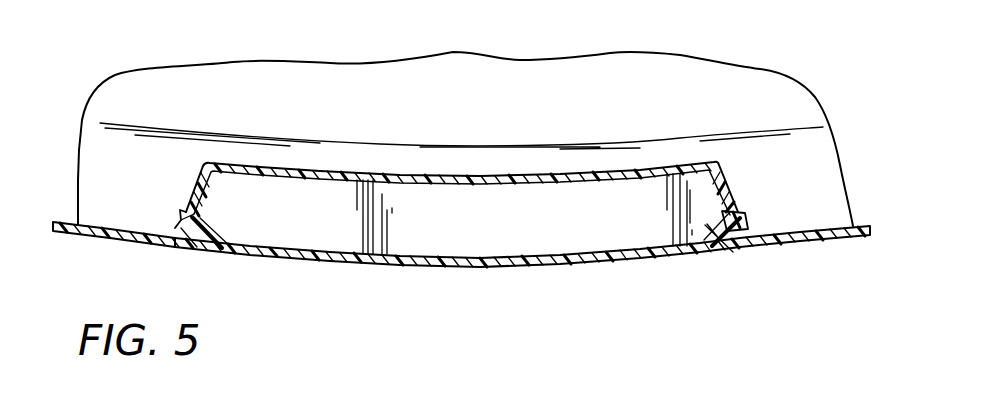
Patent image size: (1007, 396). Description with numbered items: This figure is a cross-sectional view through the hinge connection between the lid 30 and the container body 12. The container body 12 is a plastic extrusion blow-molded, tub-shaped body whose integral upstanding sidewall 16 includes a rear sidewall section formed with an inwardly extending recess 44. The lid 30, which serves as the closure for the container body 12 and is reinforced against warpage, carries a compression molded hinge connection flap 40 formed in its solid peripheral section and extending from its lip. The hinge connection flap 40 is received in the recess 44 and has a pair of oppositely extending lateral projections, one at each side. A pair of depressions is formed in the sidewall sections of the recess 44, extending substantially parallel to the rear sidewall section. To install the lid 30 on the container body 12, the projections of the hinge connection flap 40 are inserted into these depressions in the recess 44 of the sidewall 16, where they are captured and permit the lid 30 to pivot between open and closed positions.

The container body 12 is at (522, 176).
The sidewall 16 is at (125, 223).
The lid 30 is at (613, 256).
The hinge connection flap 40 is at (497, 258).
The recess 44 is at (358, 173).